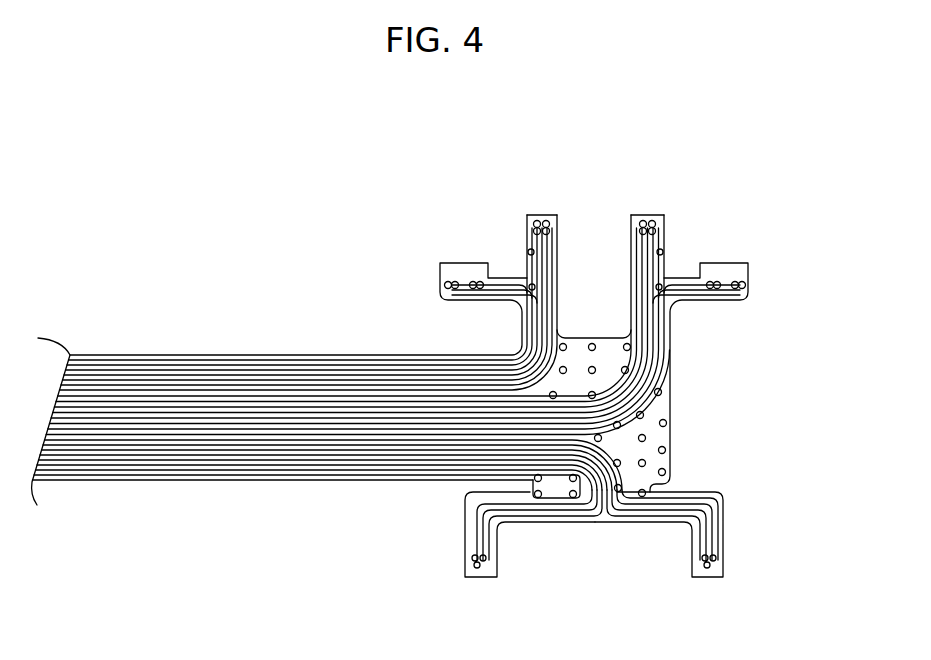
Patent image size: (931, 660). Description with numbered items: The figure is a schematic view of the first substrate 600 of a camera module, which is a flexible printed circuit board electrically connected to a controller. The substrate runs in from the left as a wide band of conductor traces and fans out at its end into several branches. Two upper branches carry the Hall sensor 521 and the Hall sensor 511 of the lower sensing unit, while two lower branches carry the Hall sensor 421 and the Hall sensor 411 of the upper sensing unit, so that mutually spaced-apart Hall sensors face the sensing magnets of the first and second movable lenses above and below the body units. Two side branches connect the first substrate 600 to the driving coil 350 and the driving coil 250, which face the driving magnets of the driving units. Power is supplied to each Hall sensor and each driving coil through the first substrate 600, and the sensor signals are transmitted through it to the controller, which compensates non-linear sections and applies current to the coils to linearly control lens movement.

The first substrate 600 is at (208, 492).
The Hall sensor 521 is at (541, 216).
The Hall sensor 511 is at (651, 216).
The driving coil 350 is at (452, 268).
The driving coil 250 is at (744, 273).
The Hall sensor 421 is at (480, 570).
The Hall sensor 411 is at (703, 567).